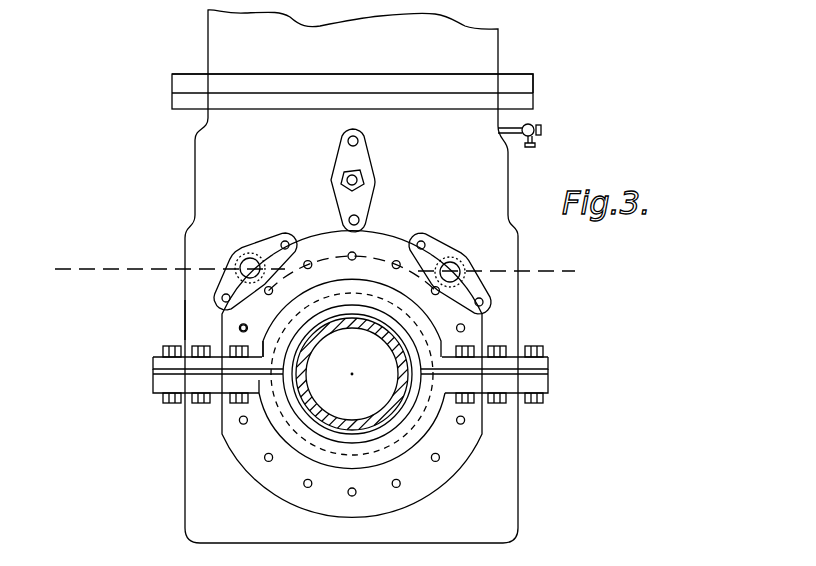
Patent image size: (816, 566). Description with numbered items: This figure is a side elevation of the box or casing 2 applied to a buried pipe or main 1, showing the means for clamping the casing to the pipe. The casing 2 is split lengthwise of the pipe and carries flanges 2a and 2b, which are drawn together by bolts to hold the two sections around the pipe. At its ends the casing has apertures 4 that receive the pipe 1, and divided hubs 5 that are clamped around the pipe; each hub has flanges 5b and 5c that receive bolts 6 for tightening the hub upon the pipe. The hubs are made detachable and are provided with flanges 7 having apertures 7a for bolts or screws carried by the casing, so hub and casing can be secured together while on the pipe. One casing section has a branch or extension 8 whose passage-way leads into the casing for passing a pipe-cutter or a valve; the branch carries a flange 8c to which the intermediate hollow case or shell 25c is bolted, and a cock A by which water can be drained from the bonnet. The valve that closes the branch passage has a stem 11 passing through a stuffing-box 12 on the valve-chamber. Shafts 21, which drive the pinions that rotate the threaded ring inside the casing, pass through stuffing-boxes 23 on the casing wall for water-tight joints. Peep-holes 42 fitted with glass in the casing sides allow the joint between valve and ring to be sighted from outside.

The pipe or main 1 is at (352, 374).
The box or casing 2 is at (351, 379).
The flange 2a is at (153, 391).
The flange 2b is at (153, 359).
The aperture 4 is at (318, 272).
The hub 5 is at (352, 373).
The flange 5b is at (251, 355).
The flange 5c is at (228, 383).
The bolt 6 is at (235, 326).
The flange 7 is at (352, 374).
The aperture 7a is at (312, 486).
The branch or extension 8 is at (351, 112).
The flange 8c is at (533, 100).
The stem 11 is at (362, 180).
The stuffing-box 12 is at (333, 165).
The shaft 21 is at (250, 268).
The stuffing-box 23 is at (352, 290).
The intermediate hollow case or shell 25c is at (547, 70).
The peep-hole 42 is at (170, 316).
The cock A is at (547, 133).